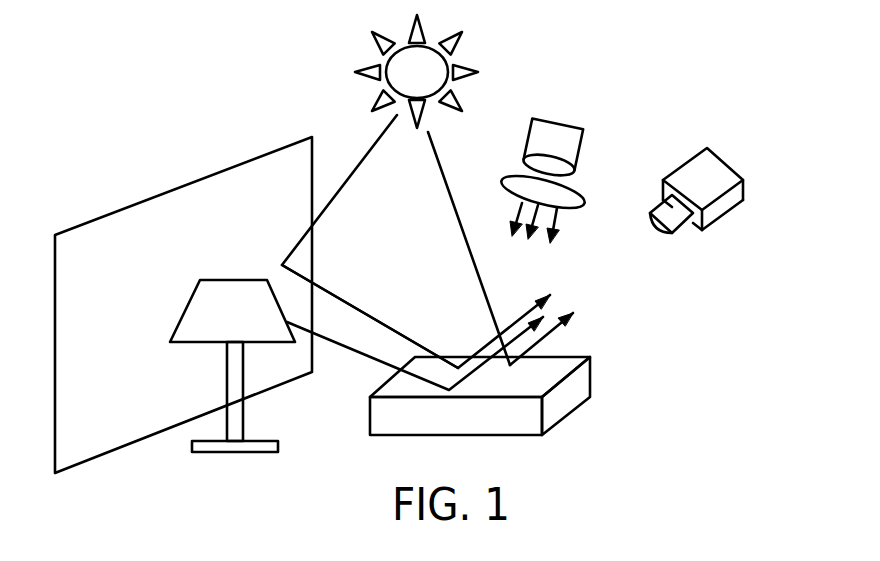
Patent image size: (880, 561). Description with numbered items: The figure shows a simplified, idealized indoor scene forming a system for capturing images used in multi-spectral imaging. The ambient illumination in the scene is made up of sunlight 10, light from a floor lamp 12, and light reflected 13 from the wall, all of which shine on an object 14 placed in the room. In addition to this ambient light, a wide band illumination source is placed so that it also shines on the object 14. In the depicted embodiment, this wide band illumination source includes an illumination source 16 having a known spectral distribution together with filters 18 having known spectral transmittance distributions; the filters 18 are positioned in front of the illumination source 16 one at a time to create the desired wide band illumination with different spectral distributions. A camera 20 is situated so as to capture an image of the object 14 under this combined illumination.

The sunlight 10 is at (449, 195).
The light from a floor lamp 12 is at (380, 363).
The light reflected from the wall 13 is at (348, 300).
The object 14 is at (568, 398).
The illumination source 16 is at (552, 132).
The filters 18 is at (575, 192).
The camera 20 is at (707, 167).